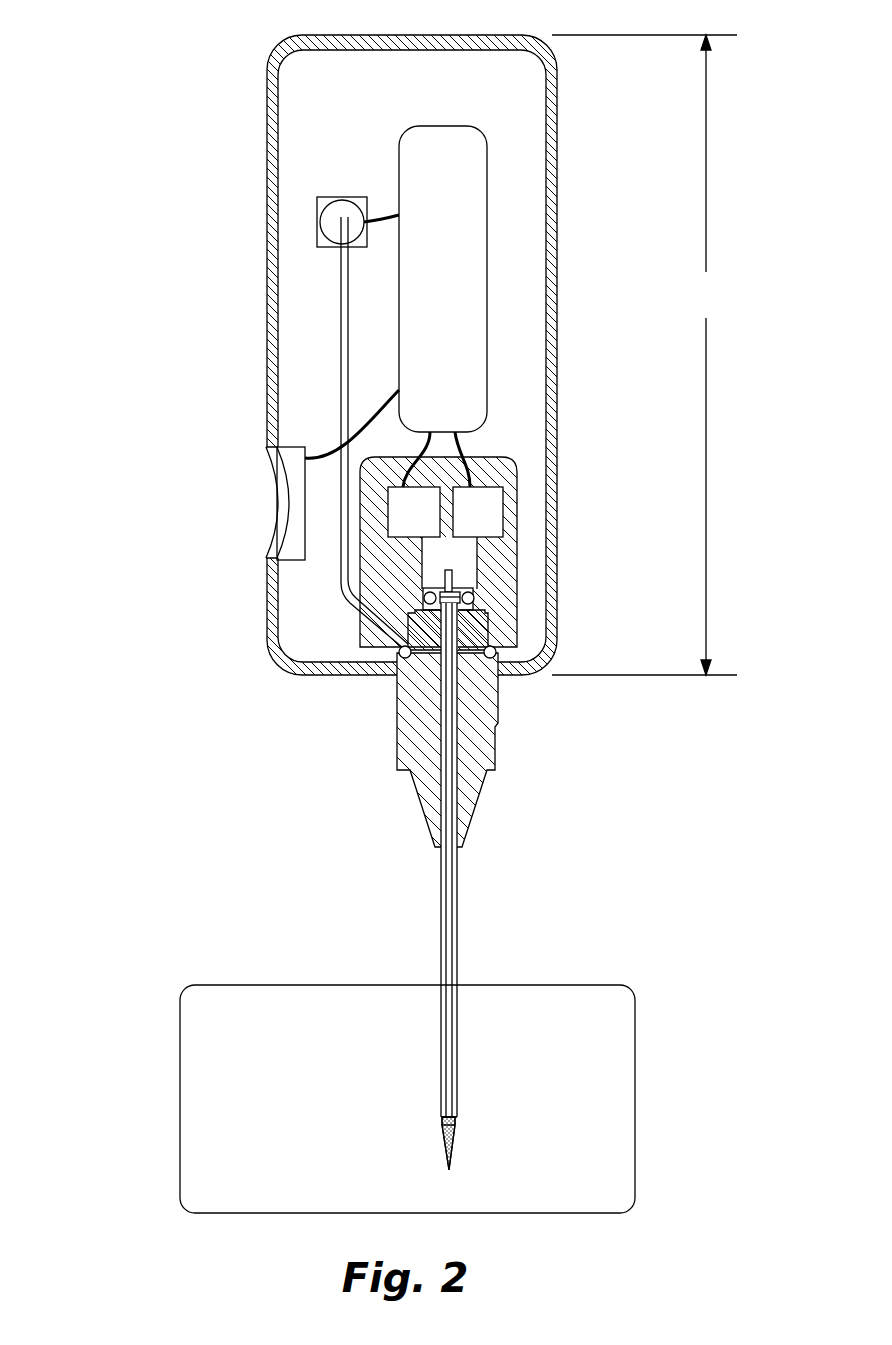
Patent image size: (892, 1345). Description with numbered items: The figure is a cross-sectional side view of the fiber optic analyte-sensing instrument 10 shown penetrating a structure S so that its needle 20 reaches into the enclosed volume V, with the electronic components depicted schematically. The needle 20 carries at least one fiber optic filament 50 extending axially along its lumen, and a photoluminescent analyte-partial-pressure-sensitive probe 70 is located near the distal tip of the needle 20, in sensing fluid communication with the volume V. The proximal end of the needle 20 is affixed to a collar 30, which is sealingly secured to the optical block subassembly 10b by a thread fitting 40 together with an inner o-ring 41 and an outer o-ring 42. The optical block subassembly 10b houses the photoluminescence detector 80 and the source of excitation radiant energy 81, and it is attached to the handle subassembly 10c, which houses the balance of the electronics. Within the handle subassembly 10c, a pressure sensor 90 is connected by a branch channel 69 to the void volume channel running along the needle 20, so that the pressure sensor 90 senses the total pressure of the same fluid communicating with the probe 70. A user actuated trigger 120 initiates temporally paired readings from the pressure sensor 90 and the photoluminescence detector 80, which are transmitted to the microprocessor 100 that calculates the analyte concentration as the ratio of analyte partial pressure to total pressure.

The fiber optic analyte-sensing instrument 10 is at (166, 266).
The optical block subassembly 10b is at (497, 552).
The handle subassembly 10c is at (644, 355).
The needle 20 is at (441, 935).
The collar 30 is at (485, 738).
The thread fitting 40 is at (488, 625).
The inner o-ring 41 is at (497, 652).
The outer o-ring 42 is at (474, 594).
The fiber optic filament 50 is at (447, 967).
The branch channel 69 is at (338, 328).
The photoluminescent analyte-partial-pressure-sensitive probe 70 is at (452, 1138).
The photoluminescence detector 80 is at (399, 525).
The source of excitation radiant energy 81 is at (464, 525).
The pressure sensor 90 is at (333, 212).
The microprocessor 100 is at (420, 285).
The user actuated trigger 120 is at (292, 475).
The structure S is at (260, 985).
The volume V is at (300, 1106).